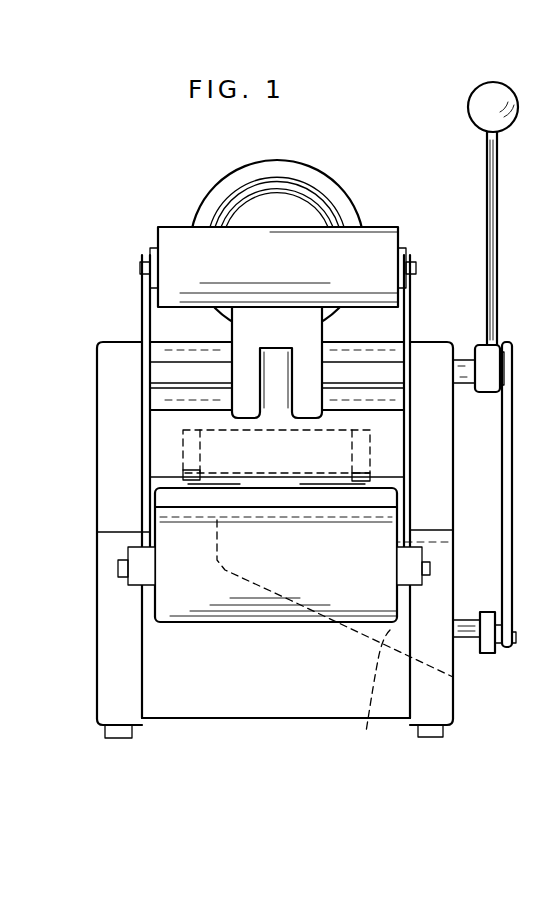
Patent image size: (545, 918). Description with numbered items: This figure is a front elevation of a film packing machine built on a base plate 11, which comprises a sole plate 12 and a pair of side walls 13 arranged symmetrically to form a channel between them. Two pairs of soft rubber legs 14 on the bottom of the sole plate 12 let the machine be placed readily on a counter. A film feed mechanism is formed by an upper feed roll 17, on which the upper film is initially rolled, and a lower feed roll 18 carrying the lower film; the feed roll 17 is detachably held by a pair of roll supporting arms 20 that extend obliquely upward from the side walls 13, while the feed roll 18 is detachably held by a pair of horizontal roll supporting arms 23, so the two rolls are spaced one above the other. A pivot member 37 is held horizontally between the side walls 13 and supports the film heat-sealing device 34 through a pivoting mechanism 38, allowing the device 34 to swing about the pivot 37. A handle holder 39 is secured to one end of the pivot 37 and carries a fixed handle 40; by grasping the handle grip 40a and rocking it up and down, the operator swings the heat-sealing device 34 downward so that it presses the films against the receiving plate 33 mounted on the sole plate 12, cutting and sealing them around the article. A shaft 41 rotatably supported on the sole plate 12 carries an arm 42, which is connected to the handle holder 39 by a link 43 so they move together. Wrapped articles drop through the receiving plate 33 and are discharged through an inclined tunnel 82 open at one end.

The base plate 11 is at (296, 722).
The sole plate 12 is at (242, 706).
The side walls 13 is at (102, 402).
The rubber legs 14 is at (431, 737).
The feed roll 17 is at (178, 238).
The feed roll 18 is at (165, 598).
The roll supporting arms 20 is at (142, 310).
The roll supporting arms 23 is at (120, 578).
The receiving plate 33 is at (166, 502).
The film heat-sealing device 34 is at (340, 164).
The pivot member 37 is at (342, 368).
The pivoting mechanism 38 is at (242, 352).
The handle holder 39 is at (482, 348).
The handle 40 is at (490, 197).
The handle grip 40a is at (482, 123).
The shaft 41 is at (465, 640).
The arm 42 is at (490, 648).
The link 43 is at (500, 468).
The inclined tunnel 82 is at (335, 644).